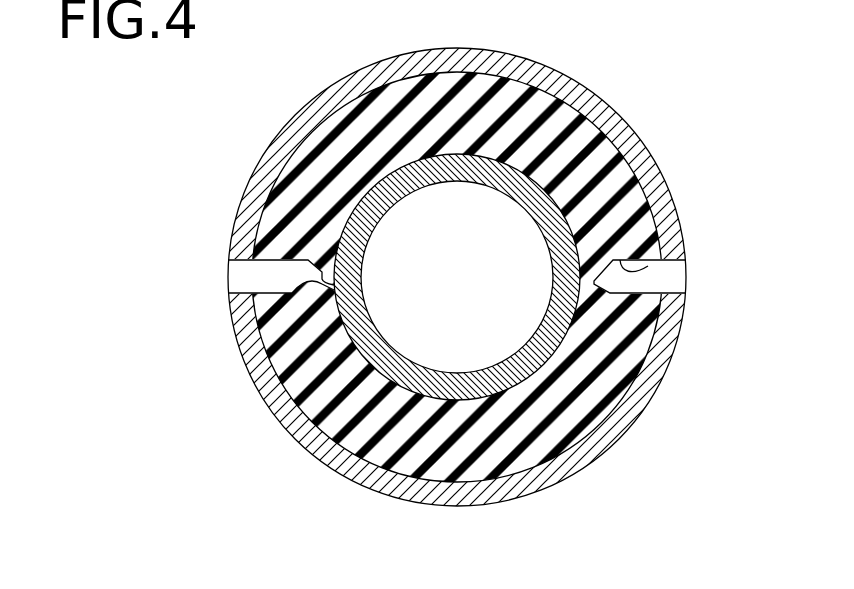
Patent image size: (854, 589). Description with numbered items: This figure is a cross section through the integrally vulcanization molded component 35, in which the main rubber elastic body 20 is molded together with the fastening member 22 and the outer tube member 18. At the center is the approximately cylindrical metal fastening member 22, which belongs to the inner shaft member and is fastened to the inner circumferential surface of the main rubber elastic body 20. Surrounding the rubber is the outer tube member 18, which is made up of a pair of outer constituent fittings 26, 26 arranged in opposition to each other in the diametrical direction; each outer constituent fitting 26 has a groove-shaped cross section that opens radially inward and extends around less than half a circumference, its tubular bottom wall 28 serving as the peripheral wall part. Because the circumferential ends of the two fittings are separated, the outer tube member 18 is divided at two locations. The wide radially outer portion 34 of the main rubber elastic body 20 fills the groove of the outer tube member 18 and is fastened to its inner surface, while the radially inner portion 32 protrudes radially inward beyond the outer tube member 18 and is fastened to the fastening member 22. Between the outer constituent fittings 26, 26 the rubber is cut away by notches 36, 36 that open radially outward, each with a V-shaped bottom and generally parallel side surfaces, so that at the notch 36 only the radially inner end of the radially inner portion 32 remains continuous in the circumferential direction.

The outer tube member 18 is at (136, 230).
The main rubber elastic body 20 is at (618, 412).
The fastening member 22 is at (407, 168).
The outer constituent fitting 26 is at (226, 216).
The bottom wall 28 is at (278, 157).
The radially inner portion 32 is at (470, 405).
The radially outer portion 34 is at (425, 453).
The integrally vulcanization molded component 35 is at (646, 70).
The notch 36 is at (288, 284).